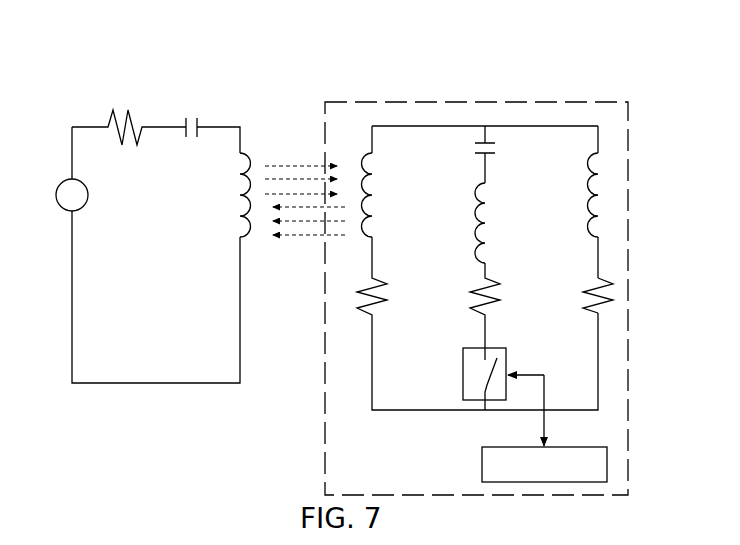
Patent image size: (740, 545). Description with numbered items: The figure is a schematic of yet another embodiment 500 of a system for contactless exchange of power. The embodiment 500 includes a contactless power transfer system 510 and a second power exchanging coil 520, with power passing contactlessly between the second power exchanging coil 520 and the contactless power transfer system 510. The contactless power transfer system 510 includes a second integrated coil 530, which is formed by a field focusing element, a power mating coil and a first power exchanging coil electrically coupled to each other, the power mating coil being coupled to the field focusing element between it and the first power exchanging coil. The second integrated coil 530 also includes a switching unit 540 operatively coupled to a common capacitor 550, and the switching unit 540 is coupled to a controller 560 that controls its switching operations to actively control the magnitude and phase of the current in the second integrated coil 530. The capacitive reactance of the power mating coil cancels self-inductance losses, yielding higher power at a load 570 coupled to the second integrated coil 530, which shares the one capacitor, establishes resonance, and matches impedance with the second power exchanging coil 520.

The embodiment of the system for contactless exchange of power 500 is at (608, 45).
The contactless power transfer system 510 is at (506, 99).
The second power exchanging coil 520 is at (87, 124).
The second integrated coil 530 is at (403, 121).
The switching unit 540 is at (508, 352).
The common capacitor 550 is at (479, 154).
The controller 560 is at (609, 466).
The load 570 is at (89, 195).